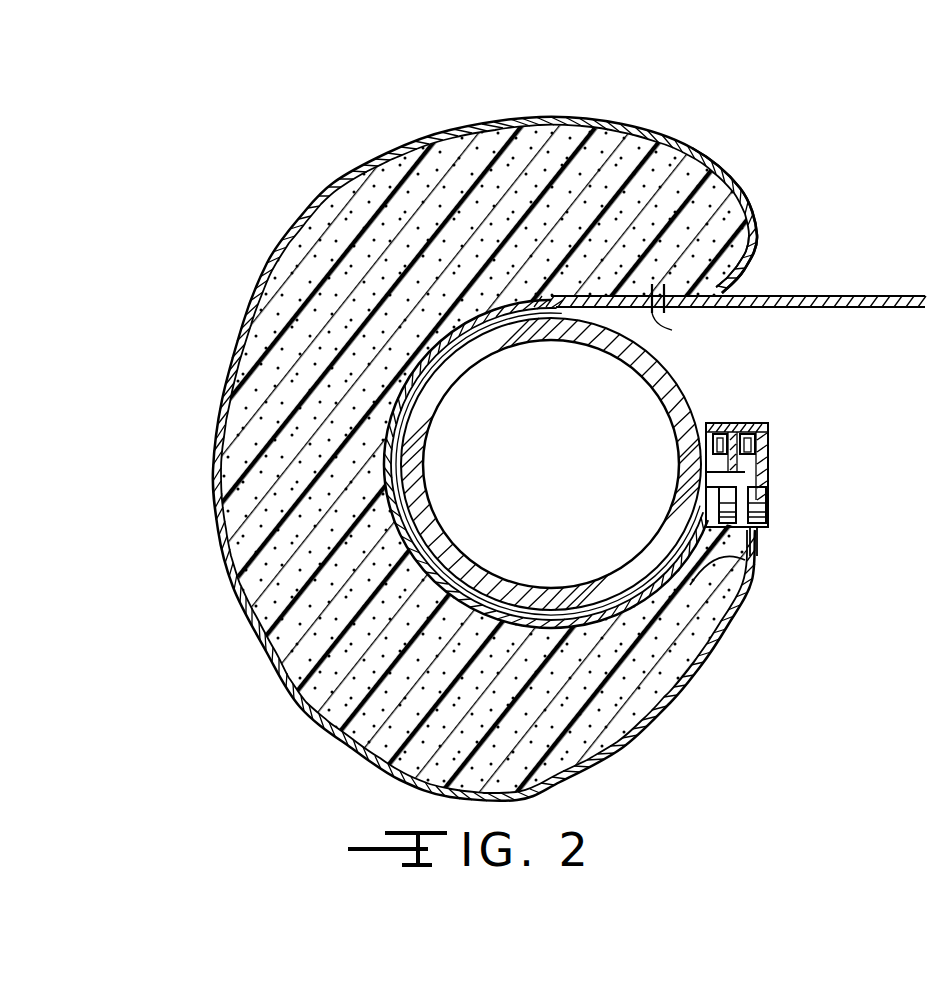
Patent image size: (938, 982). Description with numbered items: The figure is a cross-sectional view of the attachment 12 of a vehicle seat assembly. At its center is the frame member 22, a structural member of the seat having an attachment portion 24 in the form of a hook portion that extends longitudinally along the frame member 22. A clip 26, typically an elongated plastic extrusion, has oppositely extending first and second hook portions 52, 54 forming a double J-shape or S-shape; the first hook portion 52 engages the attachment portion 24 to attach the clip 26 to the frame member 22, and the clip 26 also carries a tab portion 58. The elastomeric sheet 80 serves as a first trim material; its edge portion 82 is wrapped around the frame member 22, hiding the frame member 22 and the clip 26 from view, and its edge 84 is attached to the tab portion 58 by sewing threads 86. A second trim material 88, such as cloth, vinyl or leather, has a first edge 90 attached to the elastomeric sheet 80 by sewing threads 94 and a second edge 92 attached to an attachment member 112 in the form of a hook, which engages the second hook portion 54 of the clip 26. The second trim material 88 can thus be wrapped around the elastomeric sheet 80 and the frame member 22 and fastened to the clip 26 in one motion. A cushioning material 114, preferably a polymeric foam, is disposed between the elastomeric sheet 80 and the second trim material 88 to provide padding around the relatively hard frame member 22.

The attachment 12 is at (248, 172).
The second trim material 88 is at (405, 152).
The first edge 90 is at (745, 282).
The elastomeric sheet 80 is at (793, 298).
The sewing threads 94 is at (662, 314).
The first hook portion 52 is at (718, 421).
The clip 26 is at (733, 422).
The frame member 22 is at (630, 370).
The second hook portion 54 is at (770, 446).
The attachment portion 24 is at (706, 470).
The attachment member 112 is at (770, 466).
The edge portion 82 is at (418, 548).
The sewing threads 86 is at (704, 497).
The edge 84 is at (702, 526).
The second edge 92 is at (753, 538).
The tab portion 58 is at (753, 549).
The cushioning material 114 is at (330, 680).